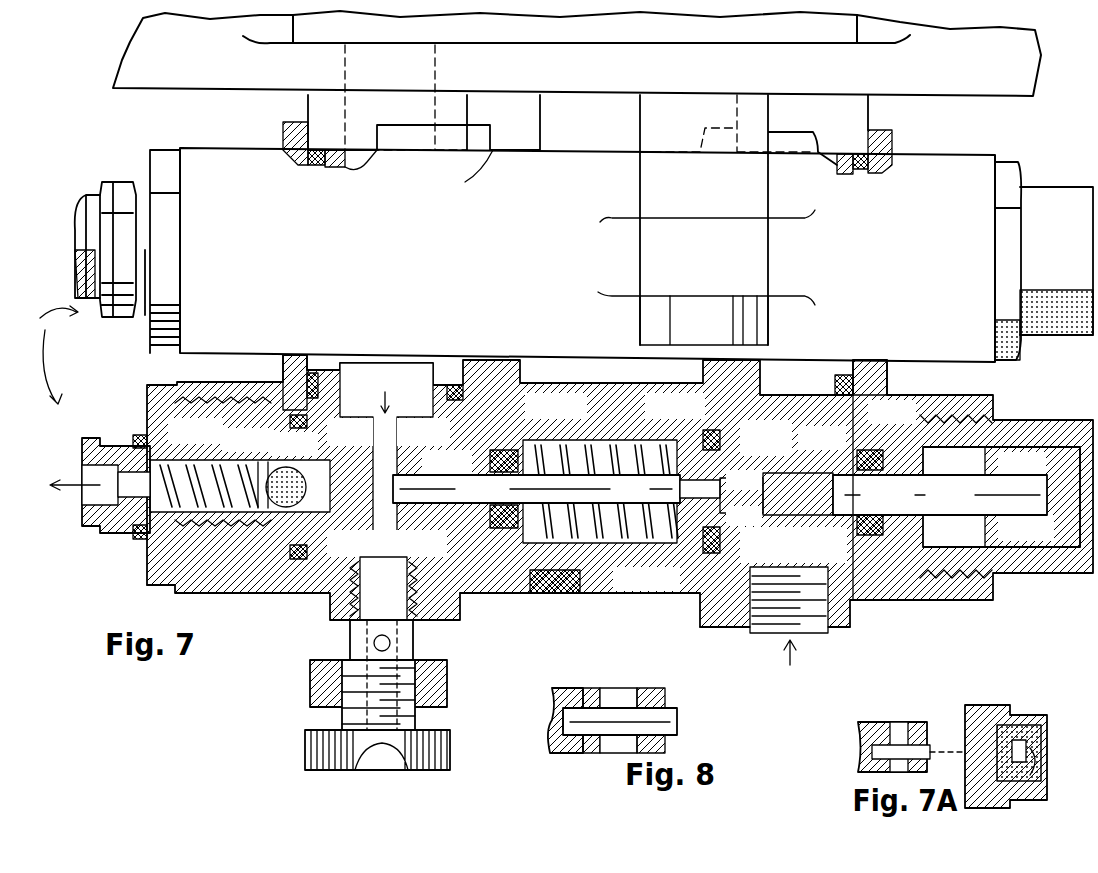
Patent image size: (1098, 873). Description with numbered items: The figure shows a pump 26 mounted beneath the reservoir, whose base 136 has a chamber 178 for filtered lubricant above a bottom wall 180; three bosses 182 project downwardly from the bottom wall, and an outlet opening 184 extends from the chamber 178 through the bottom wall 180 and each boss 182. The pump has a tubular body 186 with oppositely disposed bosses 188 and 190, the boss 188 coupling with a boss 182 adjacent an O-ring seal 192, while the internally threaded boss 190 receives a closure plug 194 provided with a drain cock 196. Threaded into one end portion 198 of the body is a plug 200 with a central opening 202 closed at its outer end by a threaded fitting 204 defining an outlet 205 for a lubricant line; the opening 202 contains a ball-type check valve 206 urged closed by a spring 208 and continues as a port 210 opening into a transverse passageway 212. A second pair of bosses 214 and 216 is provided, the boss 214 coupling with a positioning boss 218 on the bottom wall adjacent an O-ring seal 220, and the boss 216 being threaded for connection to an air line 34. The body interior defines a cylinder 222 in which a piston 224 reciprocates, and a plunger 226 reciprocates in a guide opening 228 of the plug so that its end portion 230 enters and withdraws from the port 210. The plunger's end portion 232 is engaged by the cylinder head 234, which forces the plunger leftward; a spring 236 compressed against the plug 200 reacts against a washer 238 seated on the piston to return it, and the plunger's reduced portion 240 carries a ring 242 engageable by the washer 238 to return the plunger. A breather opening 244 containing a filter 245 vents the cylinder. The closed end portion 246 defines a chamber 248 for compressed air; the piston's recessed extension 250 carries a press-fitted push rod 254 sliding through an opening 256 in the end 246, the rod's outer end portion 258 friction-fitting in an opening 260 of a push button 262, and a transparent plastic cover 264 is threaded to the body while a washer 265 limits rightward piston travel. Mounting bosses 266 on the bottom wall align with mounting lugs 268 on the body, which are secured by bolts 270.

In FIG. 7, the pump 26 is at (43, 354).
In FIG. 7, the air line 34 is at (752, 640).
In FIG. 7, the base 136 is at (148, 38).
In FIG. 7, the chamber 178 is at (524, 37).
In FIG. 7, the bottom wall 180 is at (650, 79).
In FIG. 7, the boss 182 is at (306, 104).
In FIG. 7, the outlet opening 184 is at (436, 68).
In FIG. 7, the tubular body 186 is at (500, 259).
In FIG. 7, the boss 188 is at (497, 150).
In FIG. 7, the boss 190 is at (318, 372).
In FIG. 7, the O-ring seal 192 is at (322, 167).
In FIG. 7, the closure plug 194 is at (447, 670).
In FIG. 7, the drain cock 196 is at (306, 750).
In FIG. 7, the end portion 198 is at (256, 586).
In FIG. 7, the plug 200 is at (190, 552).
In FIG. 7, the central opening 202 is at (259, 462).
In FIG. 7, the threaded fitting 204 is at (120, 318).
In FIG. 7, the outlet 205 is at (86, 478).
In FIG. 7, the ball-type check valve 206 is at (298, 470).
In FIG. 7, the spring 208 is at (180, 464).
In FIG. 7, the port 210 is at (356, 474).
In FIG. 8, the port 210 is at (580, 708).
In FIG. 7A, the port 210 is at (860, 730).
In FIG. 7, the transverse passageway 212 is at (395, 470).
In FIG. 8, the transverse passageway 212 is at (630, 695).
In FIG. 7A, the transverse passageway 212 is at (896, 728).
In FIG. 7, the boss 214 is at (894, 143).
In FIG. 7, the boss 216 is at (846, 630).
In FIG. 7, the positioning boss 218 is at (868, 118).
In FIG. 7, the O-ring seal 220 is at (862, 172).
In FIG. 7, the cylinder 222 is at (528, 426).
In FIG. 7, the piston 224 is at (612, 594).
In FIG. 7, the plunger 226 is at (500, 502).
In FIG. 8, the plunger 226 is at (680, 722).
In FIG. 7A, the plunger 226 is at (910, 745).
In FIG. 7, the guide opening 228 is at (430, 472).
In FIG. 8, the guide opening 228 is at (666, 692).
In FIG. 7, the end portion 230 is at (372, 518).
In FIG. 8, the end portion 230 is at (560, 753).
In FIG. 7A, the end portion 230 is at (872, 760).
In FIG. 7, the end portion 232 is at (721, 488).
In FIG. 7, the cylinder head 234 is at (747, 486).
In FIG. 7, the spring 236 is at (645, 430).
In FIG. 7, the washer 238 is at (646, 578).
In FIG. 7, the reduced portion 240 is at (672, 490).
In FIG. 7, the ring 242 is at (779, 502).
In FIG. 7, the breather opening 244 is at (560, 594).
In FIG. 7, the filter 245 is at (536, 595).
In FIG. 7, the closed end portion 246 is at (900, 588).
In FIG. 7, the chamber 248 is at (773, 559).
In FIG. 7, the recessed extension 250 is at (857, 458).
In FIG. 7, the push rod 254 is at (940, 495).
In FIG. 7, the opening 256 is at (948, 494).
In FIG. 7, the outer end portion 258 is at (1032, 497).
In FIG. 7A, the outer end portion 258 is at (993, 722).
In FIG. 7, the opening 260 is at (1026, 527).
In FIG. 7A, the opening 260 is at (1045, 785).
In FIG. 7, the push button 262 is at (1052, 452).
In FIG. 7A, the push button 262 is at (1025, 738).
In FIG. 7, the transparent plastic cover 264 is at (1032, 576).
In FIG. 7A, the transparent plastic cover 264 is at (1042, 738).
In FIG. 7, the washer 265 is at (866, 442).
In FIG. 7, the mounting boss 266 is at (642, 178).
In FIG. 7, the mounting lug 268 is at (765, 258).
In FIG. 7, the bolt 270 is at (770, 322).